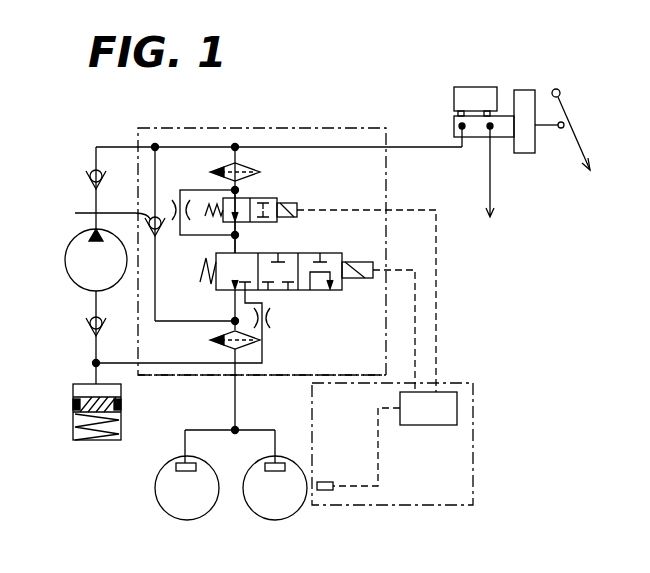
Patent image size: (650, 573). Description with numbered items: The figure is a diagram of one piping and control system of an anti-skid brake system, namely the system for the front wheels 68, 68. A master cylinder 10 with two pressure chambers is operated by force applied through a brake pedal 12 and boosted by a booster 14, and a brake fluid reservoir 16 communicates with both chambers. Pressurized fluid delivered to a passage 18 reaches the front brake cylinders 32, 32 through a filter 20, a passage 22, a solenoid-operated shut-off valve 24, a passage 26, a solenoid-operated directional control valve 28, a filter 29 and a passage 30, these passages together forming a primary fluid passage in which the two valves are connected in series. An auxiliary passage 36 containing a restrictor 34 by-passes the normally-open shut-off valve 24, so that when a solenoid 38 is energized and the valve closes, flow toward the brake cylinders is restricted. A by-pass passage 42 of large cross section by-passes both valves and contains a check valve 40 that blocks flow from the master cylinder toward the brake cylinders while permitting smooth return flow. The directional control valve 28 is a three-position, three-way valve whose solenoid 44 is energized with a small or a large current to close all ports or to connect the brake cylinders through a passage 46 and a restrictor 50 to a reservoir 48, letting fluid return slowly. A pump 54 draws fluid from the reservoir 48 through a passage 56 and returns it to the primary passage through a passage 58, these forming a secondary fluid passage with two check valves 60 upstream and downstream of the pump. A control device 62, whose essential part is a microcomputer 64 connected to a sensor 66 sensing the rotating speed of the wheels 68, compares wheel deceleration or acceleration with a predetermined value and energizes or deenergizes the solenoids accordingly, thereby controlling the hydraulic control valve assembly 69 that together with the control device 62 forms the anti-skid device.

The master cylinder 10 is at (474, 138).
The brake pedal 12 is at (578, 143).
The booster 14 is at (524, 95).
The brake fluid reservoir 16 is at (477, 92).
The passage 18 is at (343, 147).
The filter 20 is at (243, 166).
The passage 22 is at (255, 197).
The solenoid-operated shut-off valve 24 is at (282, 206).
The passage 26 is at (243, 250).
The solenoid-operated directional control valve 28 is at (318, 254).
The filter 29 is at (212, 340).
The passage 30 is at (232, 306).
The front brake cylinders 32 is at (176, 467).
The restrictor 34 is at (174, 210).
The auxiliary passage 36 is at (200, 190).
The solenoid 38 is at (292, 205).
The check valve 40 is at (99, 213).
The by-pass passage 42 is at (155, 167).
The solenoid 44 is at (368, 279).
The passage 46 is at (158, 376).
The reservoir 48 is at (73, 392).
The restrictor 50 is at (270, 316).
The pump 54 is at (68, 258).
The passage 56 is at (96, 305).
The passage 58 is at (92, 200).
The check valves 60 is at (88, 172).
The control device 62 is at (474, 410).
The microcomputer 64 is at (427, 418).
The sensor 66 is at (327, 481).
The front wheels 68 is at (198, 508).
The hydraulic control valve assembly 69 is at (373, 124).